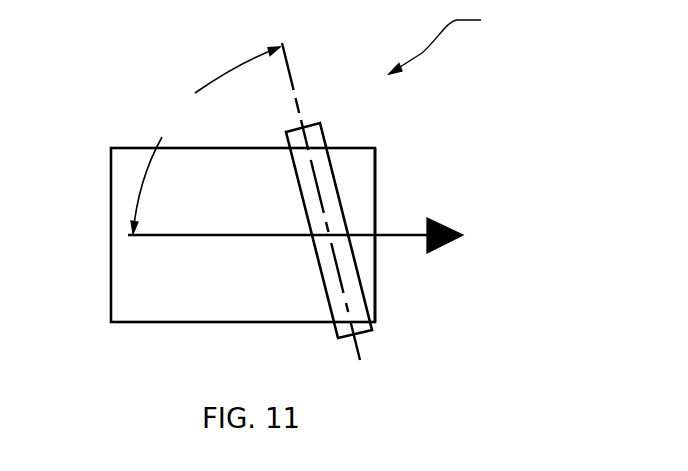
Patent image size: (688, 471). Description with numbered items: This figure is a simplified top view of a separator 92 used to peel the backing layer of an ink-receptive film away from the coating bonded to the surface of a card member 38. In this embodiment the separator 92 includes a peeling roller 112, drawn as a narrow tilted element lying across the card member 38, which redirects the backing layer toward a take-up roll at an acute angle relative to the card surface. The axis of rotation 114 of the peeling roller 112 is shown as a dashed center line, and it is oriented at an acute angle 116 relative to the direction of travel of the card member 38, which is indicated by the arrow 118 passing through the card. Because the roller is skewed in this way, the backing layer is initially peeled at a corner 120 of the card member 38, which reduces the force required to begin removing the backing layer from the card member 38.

The card member 38 is at (162, 312).
The separator 92 is at (448, 42).
The peeling roller 112 is at (325, 128).
The axis of rotation 114 is at (345, 285).
The acute angle 116 is at (205, 140).
The arrow 118 is at (408, 233).
The corner 120 is at (368, 162).